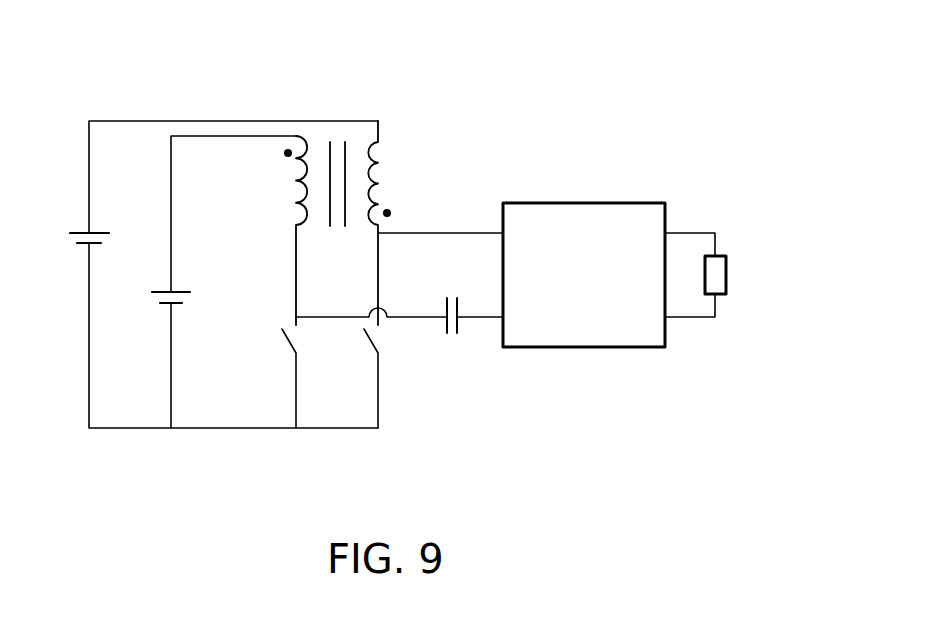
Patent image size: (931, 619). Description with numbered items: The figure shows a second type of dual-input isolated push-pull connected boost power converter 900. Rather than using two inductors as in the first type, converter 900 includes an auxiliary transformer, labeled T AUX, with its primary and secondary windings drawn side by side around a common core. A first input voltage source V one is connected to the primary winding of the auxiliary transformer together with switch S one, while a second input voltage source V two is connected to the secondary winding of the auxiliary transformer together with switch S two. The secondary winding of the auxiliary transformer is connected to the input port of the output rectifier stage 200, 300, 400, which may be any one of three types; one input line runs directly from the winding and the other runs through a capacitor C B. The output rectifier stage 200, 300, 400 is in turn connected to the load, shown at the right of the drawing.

The dual-input isolated push-pull connected boost power converter 900 is at (433, 226).
The output rectifier stage 200 is at (650, 246).
The output rectifier stage 300 is at (584, 275).
The output rectifier stage 400 is at (633, 203).